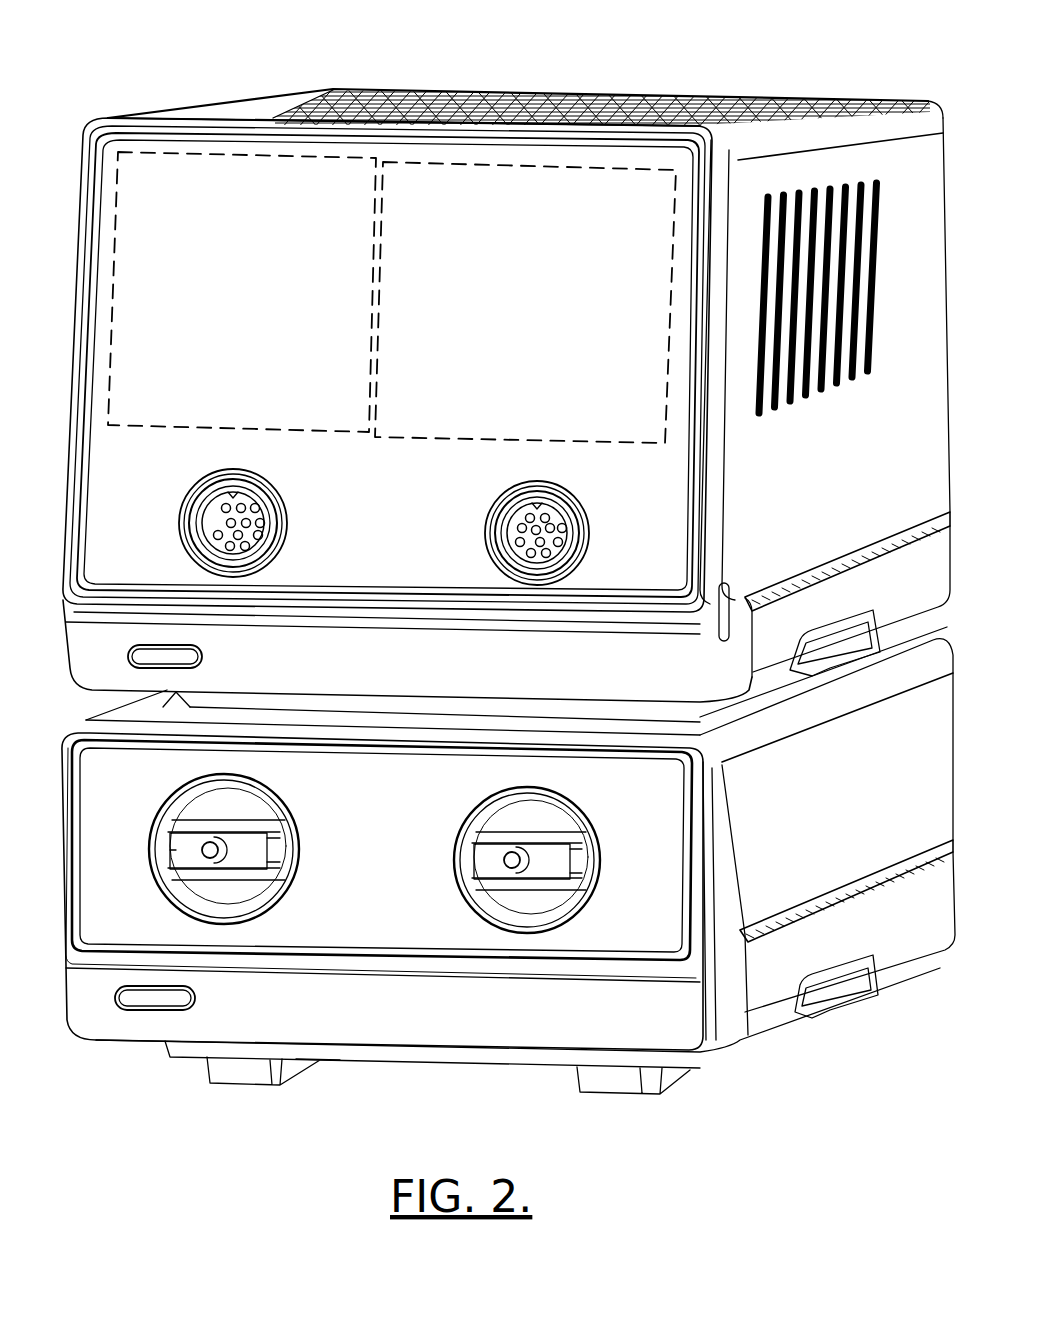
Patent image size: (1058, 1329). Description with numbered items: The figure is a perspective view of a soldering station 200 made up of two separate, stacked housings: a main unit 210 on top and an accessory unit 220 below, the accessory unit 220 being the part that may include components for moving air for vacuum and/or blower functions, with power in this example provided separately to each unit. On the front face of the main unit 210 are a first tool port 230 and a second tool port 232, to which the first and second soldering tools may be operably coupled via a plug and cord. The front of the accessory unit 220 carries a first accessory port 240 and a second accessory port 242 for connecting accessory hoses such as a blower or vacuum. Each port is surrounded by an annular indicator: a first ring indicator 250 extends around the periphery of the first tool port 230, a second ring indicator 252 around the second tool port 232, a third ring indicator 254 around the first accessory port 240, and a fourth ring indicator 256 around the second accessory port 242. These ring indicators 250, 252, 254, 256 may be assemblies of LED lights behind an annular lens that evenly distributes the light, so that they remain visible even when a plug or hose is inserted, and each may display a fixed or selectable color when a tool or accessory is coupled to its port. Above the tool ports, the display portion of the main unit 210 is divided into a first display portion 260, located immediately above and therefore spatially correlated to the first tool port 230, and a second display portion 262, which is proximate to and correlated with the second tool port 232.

The soldering station 200 is at (140, 42).
The main unit 210 is at (790, 136).
The accessory unit 220 is at (718, 953).
The first tool port 230 is at (226, 524).
The second tool port 232 is at (548, 520).
The first accessory port 240 is at (215, 834).
The second accessory port 242 is at (545, 850).
The first ring indicator 250 is at (252, 476).
The second ring indicator 252 is at (482, 528).
The third ring indicator 254 is at (333, 777).
The fourth ring indicator 256 is at (470, 912).
The first display portion 260 is at (246, 198).
The second display portion 262 is at (560, 198).